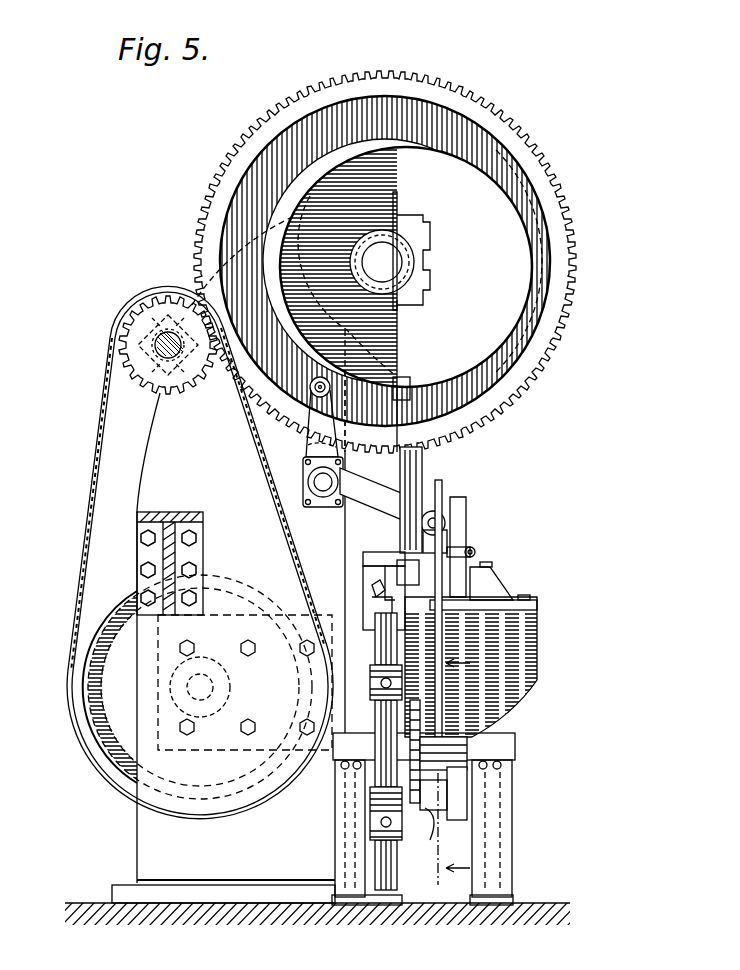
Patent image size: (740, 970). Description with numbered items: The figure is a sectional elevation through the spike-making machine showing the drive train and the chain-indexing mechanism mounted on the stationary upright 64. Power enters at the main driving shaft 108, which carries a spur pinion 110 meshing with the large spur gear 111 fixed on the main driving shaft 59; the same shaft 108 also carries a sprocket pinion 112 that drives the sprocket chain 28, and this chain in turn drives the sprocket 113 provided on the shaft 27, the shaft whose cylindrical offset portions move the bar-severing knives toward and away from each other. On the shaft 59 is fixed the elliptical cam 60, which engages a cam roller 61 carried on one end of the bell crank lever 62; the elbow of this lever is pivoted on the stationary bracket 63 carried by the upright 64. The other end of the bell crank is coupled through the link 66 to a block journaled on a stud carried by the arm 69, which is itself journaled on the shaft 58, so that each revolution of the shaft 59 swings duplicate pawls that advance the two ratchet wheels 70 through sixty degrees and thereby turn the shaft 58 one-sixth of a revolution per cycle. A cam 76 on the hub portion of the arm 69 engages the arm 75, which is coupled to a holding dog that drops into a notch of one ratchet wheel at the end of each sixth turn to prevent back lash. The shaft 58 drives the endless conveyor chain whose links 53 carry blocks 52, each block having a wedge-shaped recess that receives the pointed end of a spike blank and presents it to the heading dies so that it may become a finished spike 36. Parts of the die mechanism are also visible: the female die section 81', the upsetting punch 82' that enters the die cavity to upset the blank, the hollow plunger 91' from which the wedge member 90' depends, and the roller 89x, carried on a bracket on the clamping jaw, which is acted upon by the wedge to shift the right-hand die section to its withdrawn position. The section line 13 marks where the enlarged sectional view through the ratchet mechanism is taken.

The section line 13 is at (455, 880).
The shaft 27 is at (213, 692).
The sprocket chain 28 is at (95, 450).
The spike 36 is at (385, 594).
The block 52 is at (378, 695).
The link 53 is at (375, 625).
The shaft 58 is at (515, 745).
The main driving shaft 59 is at (390, 258).
The elliptical cam 60 is at (530, 266).
The cam roller 61 is at (305, 390).
The bell crank lever 62 is at (318, 447).
The stationary bracket 63 is at (302, 470).
The stationary upright 64 is at (157, 470).
The link 66 is at (470, 588).
The arm 69 is at (432, 840).
The ratchet wheels 70 is at (420, 718).
The arm 75 is at (455, 790).
The cam 76 is at (432, 755).
The female die section 81' is at (392, 562).
The upsetting punch 82' is at (357, 583).
The roller 89x is at (475, 549).
The wedge member 90' is at (495, 592).
The plunger 91' is at (436, 500).
The main driving shaft 108 is at (160, 330).
The spur pinion 110 is at (115, 334).
The spur gear 111 is at (196, 218).
The sprocket pinion 112 is at (125, 395).
The sprocket 113 is at (115, 588).